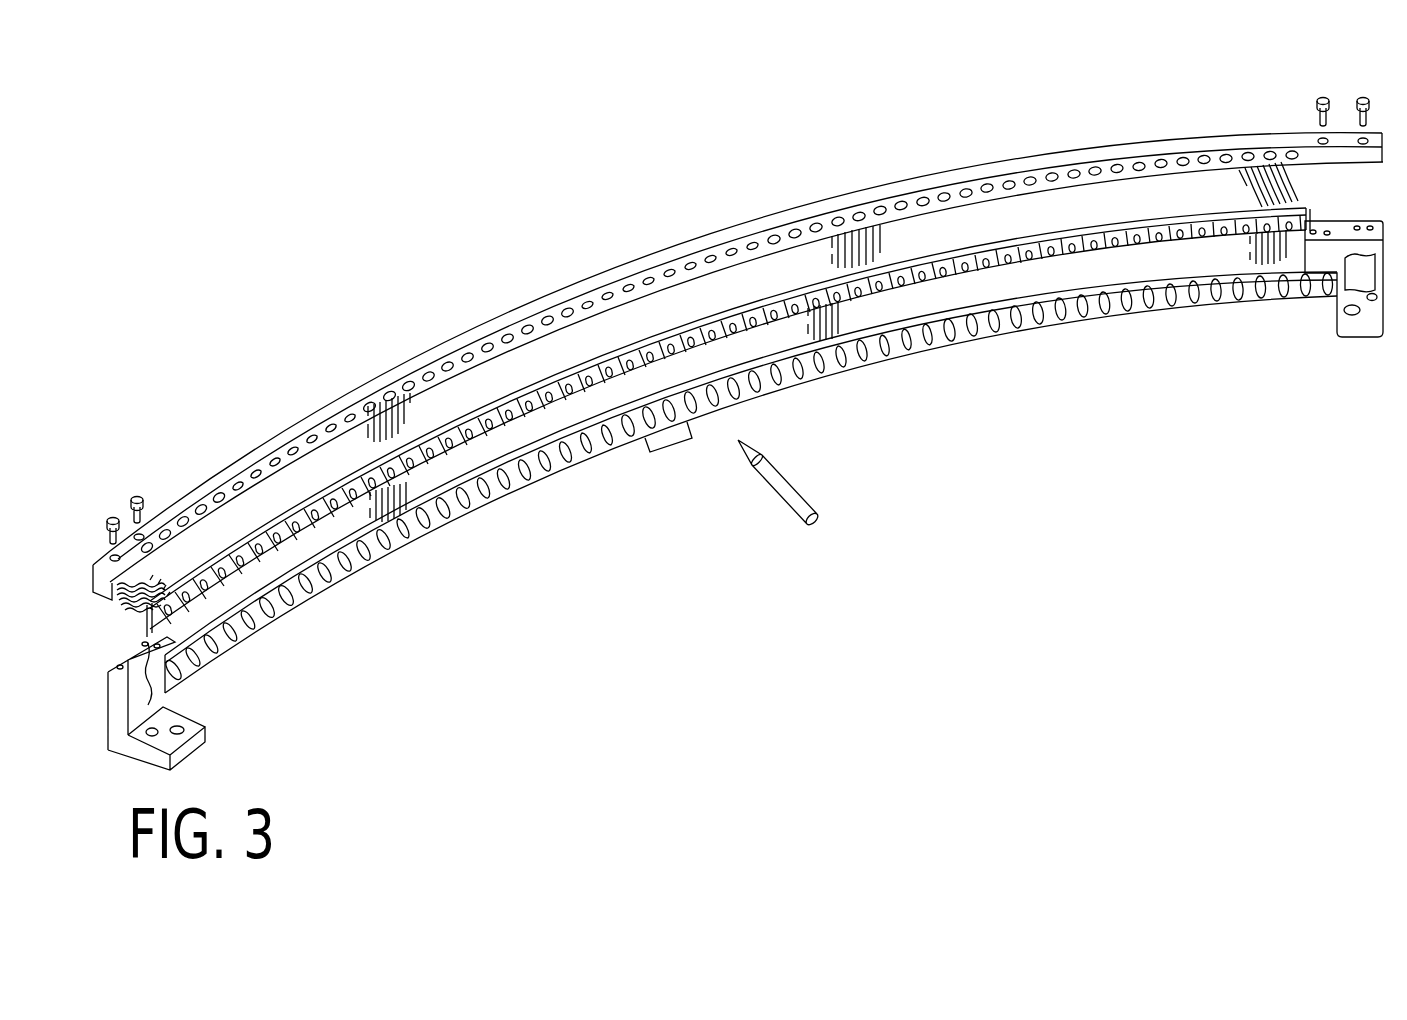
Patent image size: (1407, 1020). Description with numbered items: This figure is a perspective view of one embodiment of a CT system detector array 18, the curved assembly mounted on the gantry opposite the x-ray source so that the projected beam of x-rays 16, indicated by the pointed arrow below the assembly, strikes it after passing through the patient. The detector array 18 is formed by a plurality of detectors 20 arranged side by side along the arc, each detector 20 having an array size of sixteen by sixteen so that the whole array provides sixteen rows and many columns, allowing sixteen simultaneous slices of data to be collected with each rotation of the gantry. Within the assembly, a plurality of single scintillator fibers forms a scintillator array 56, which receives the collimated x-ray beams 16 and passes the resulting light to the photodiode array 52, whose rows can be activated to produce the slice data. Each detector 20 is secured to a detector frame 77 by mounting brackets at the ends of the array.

The beam of x-rays 16 is at (787, 502).
The detector array 18 is at (578, 266).
The detector 20 is at (372, 405).
The photodiode array 52 is at (1316, 212).
The scintillator array 56 is at (1166, 261).
The detector frame 77 is at (146, 624).